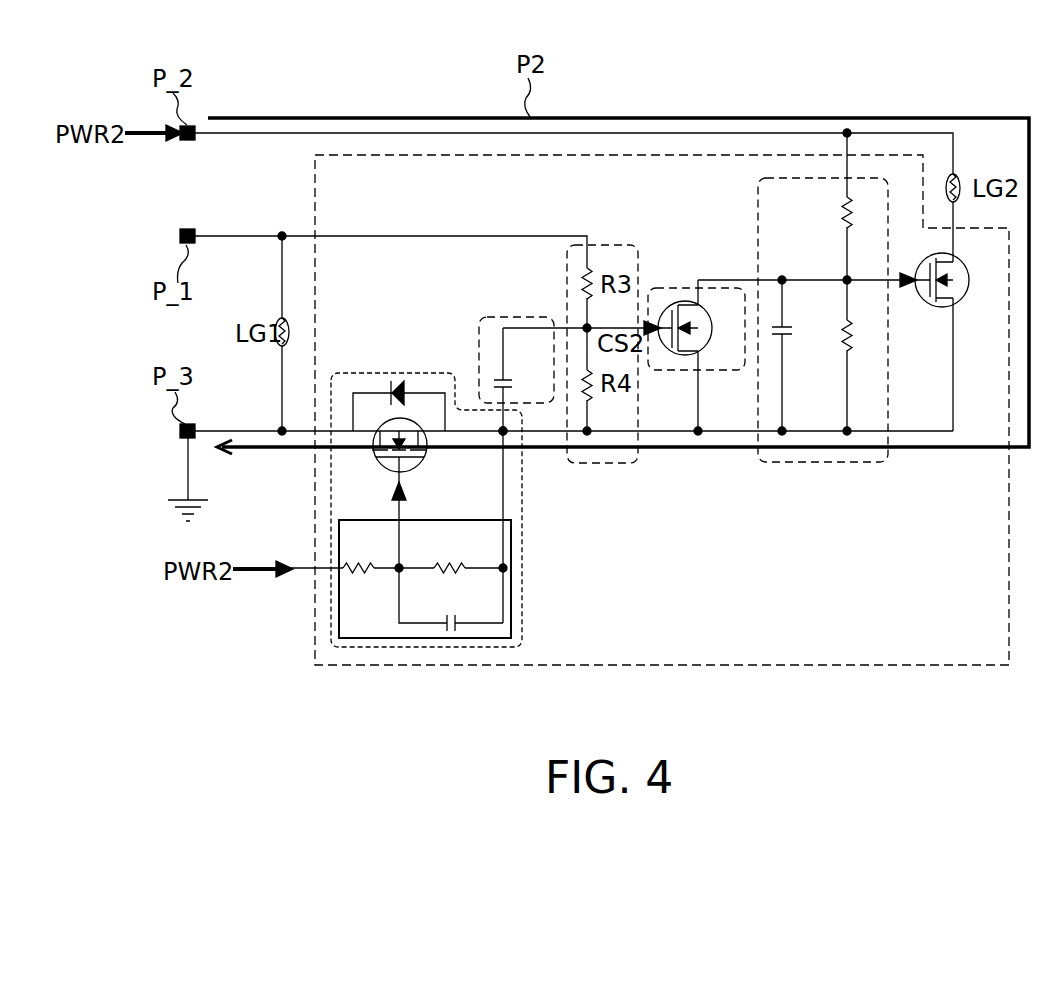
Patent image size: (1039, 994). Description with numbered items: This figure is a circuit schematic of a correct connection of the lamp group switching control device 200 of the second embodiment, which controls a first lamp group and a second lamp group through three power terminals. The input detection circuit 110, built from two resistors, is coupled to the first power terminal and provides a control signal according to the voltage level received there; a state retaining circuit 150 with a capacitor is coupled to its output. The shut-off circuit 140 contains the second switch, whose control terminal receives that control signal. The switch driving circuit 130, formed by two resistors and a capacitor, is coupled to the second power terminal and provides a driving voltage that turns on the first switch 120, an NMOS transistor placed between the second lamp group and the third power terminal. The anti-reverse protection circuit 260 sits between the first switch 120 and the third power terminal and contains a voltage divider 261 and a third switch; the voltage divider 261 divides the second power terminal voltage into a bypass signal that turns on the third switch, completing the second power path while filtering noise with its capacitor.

The input detection circuit 110 is at (610, 245).
The first switch 120 is at (941, 308).
The switch driving circuit 130 is at (756, 230).
The shut-off circuit 140 is at (680, 288).
The state retaining circuit 150 is at (511, 317).
The lamp group switching control device 200 is at (975, 667).
The anti-reverse protection circuit 260 is at (442, 480).
The voltage divider 261 is at (512, 598).